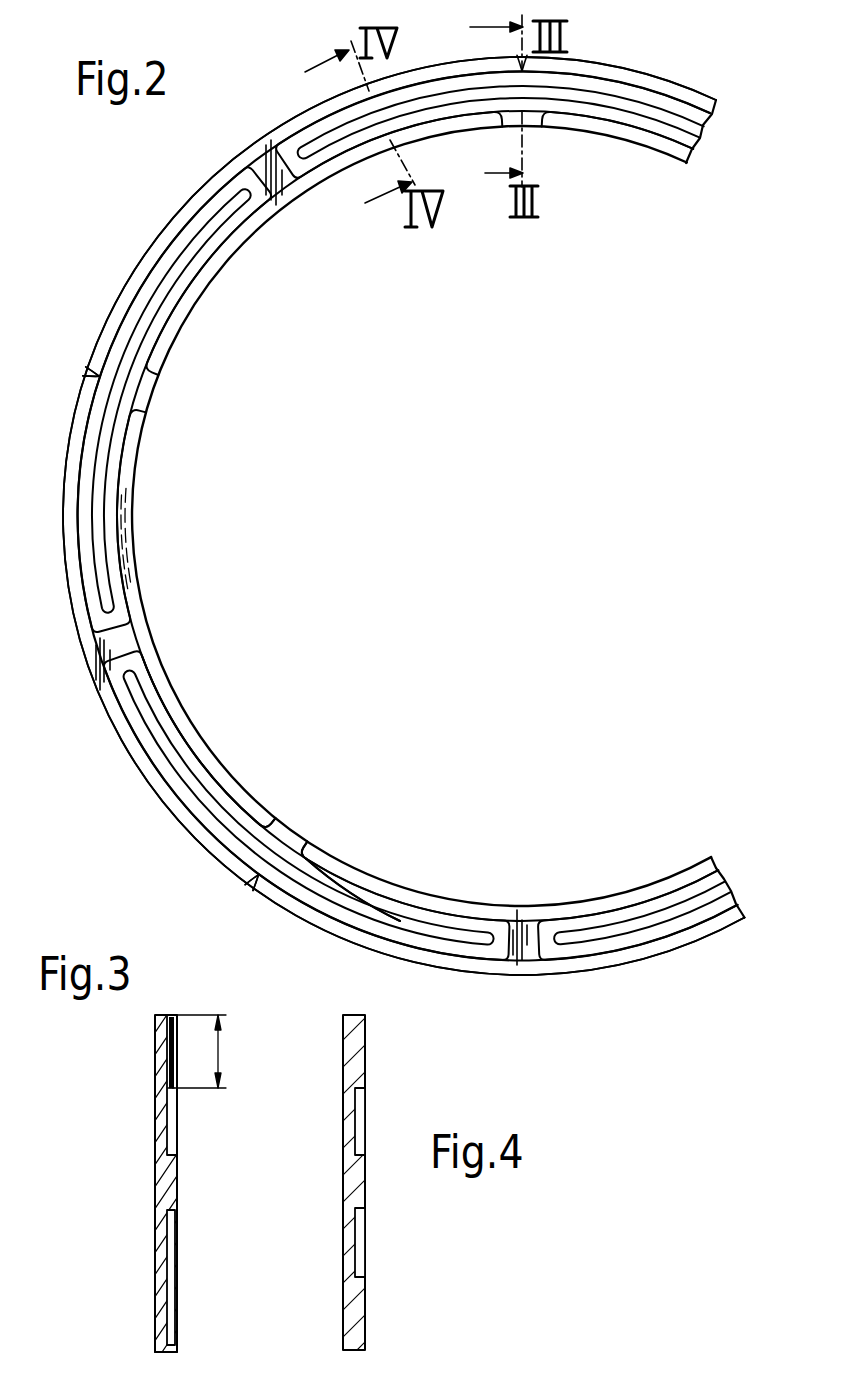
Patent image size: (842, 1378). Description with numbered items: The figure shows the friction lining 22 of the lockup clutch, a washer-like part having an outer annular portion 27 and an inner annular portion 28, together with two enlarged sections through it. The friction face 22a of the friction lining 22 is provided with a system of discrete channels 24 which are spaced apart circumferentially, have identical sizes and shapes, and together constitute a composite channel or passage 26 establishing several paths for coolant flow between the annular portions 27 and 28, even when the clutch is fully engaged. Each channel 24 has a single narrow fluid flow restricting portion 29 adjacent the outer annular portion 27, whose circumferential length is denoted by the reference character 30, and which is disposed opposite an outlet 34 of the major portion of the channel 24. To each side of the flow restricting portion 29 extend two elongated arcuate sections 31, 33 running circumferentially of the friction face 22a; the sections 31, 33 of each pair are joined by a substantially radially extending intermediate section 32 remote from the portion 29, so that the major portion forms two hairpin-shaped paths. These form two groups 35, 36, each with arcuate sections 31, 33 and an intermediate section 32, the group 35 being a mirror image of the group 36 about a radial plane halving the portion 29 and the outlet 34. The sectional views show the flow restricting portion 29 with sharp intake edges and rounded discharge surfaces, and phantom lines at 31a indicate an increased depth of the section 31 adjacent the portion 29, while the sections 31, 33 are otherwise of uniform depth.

In FIG. 2, the friction lining 22 is at (616, 72).
In FIG. 2, the friction face 22a is at (123, 477).
In FIG. 2, the discrete channels 24 is at (623, 112).
In FIG. 2, the composite channel or passage 26 is at (92, 593).
In FIG. 2, the outer annular portion 27 is at (170, 222).
In FIG. 2, the inner annular portion 28 is at (197, 303).
In FIG. 2, the fluid flow restricting portion 29 is at (96, 378).
In FIG. 3, the fluid flow restricting portion 29 is at (173, 1018).
In FIG. 2, the length of the fluid flow restricting portion 30 is at (93, 373).
In FIG. 3, the length of the fluid flow restricting portion 30 is at (222, 1052).
In FIG. 2, the elongated arcuate section 31 is at (330, 905).
In FIG. 3, the elongated arcuate section 31 is at (170, 1120).
In FIG. 4, the elongated arcuate section 31 is at (358, 1118).
In FIG. 3, the increased depth of section 31a is at (157, 1069).
In FIG. 2, the intermediate section 32 is at (497, 948).
In FIG. 2, the elongated arcuate section 33 is at (365, 893).
In FIG. 3, the elongated arcuate section 33 is at (170, 1248).
In FIG. 4, the elongated arcuate section 33 is at (358, 1248).
In FIG. 2, the outlet 34 is at (288, 847).
In FIG. 3, the outlet 34 is at (170, 1330).
In FIG. 2, the group of intermediate sections 35 is at (190, 773).
In FIG. 2, the group of intermediate sections 36 is at (440, 943).